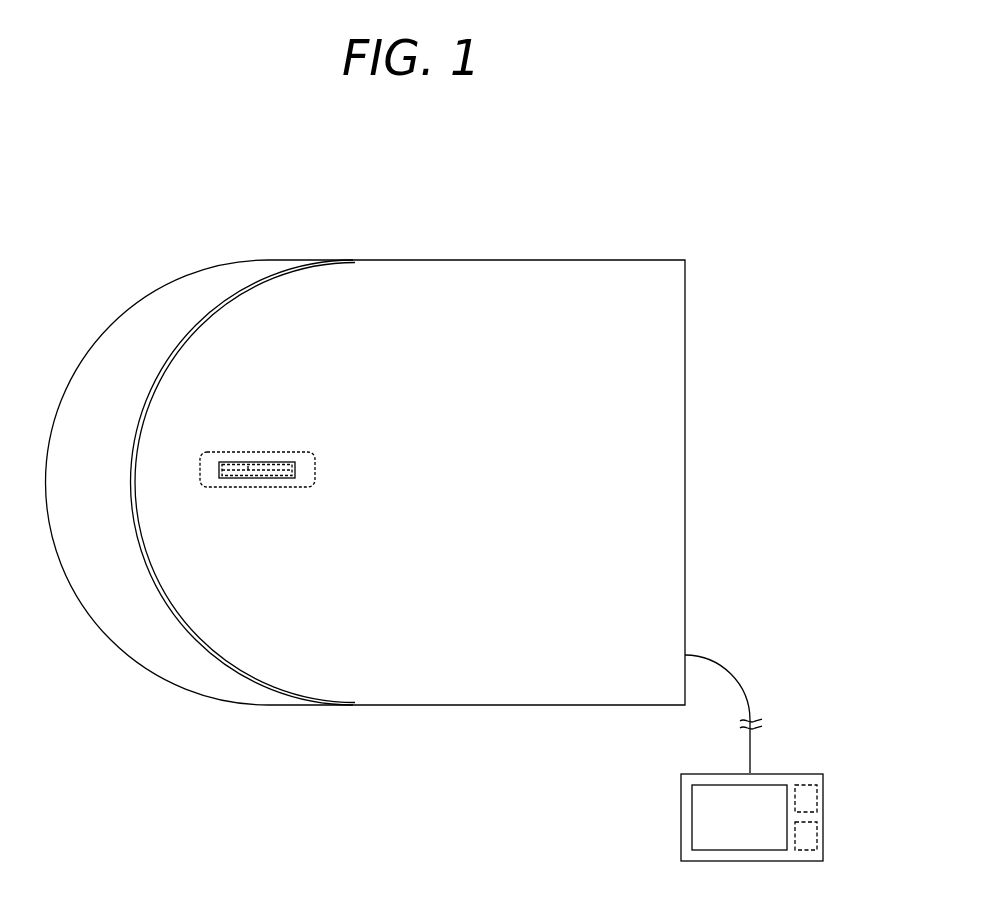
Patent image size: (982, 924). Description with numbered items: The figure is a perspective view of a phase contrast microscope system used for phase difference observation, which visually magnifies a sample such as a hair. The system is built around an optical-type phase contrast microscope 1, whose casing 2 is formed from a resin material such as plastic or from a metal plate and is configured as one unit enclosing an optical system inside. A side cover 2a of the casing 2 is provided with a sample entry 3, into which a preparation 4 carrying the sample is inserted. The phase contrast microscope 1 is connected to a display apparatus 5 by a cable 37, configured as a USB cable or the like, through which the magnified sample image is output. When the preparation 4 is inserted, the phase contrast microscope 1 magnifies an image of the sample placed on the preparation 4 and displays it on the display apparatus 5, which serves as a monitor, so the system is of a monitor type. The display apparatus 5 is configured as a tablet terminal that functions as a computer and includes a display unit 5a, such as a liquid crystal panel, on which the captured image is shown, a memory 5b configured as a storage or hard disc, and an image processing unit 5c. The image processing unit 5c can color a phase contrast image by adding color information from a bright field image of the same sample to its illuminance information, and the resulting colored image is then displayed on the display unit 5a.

The phase contrast microscope 1 is at (475, 260).
The casing 2 is at (655, 312).
The side cover 2a is at (654, 392).
The sample entry 3 is at (265, 488).
The preparation 4 is at (261, 470).
The cable 37 is at (740, 673).
The display apparatus 5 is at (680, 818).
The display unit 5a is at (732, 828).
The memory 5b is at (801, 792).
The image processing unit 5c is at (803, 843).